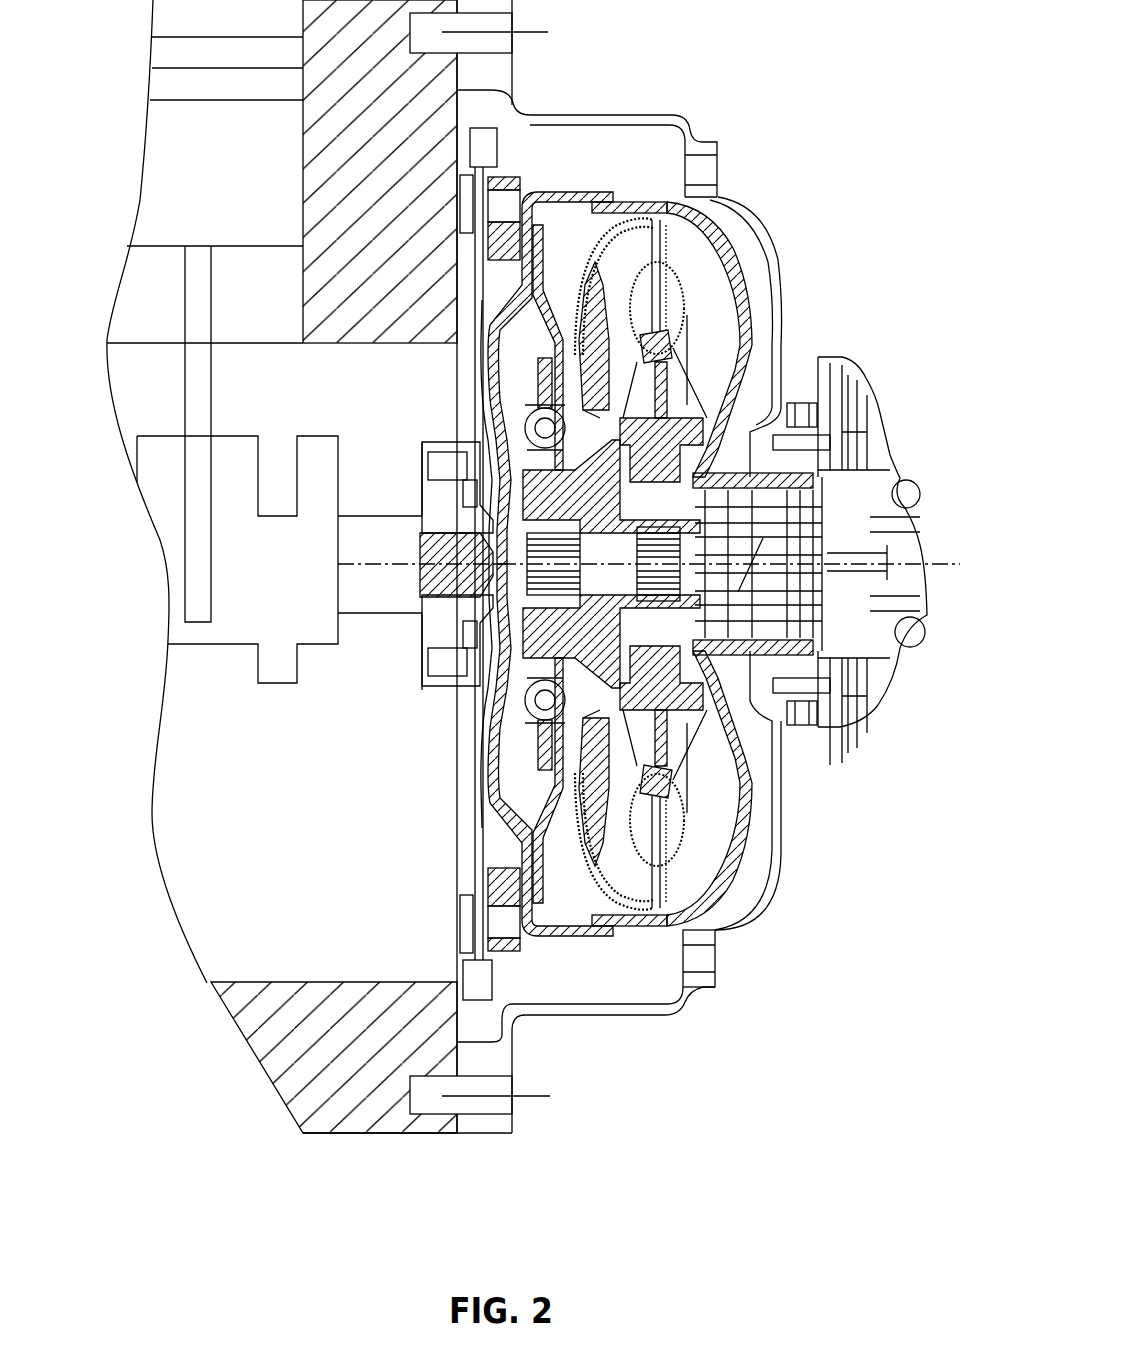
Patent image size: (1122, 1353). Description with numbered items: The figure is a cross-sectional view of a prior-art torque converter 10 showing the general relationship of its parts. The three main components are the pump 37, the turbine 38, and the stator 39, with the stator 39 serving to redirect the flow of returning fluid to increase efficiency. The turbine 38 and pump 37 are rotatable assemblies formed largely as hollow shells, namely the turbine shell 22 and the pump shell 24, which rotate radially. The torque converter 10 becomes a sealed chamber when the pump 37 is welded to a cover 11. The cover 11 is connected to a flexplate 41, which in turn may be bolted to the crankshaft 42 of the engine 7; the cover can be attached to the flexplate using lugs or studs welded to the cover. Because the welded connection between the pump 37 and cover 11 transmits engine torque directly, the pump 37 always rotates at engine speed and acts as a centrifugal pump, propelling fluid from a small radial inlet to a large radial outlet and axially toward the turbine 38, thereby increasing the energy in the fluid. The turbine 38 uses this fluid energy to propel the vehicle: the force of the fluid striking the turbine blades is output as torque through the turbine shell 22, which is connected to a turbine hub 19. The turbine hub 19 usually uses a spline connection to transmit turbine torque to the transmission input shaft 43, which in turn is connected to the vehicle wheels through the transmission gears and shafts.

The engine 7 is at (467, 1021).
The torque converter 10 is at (738, 251).
The cover 11 is at (483, 383).
The turbine hub 19 is at (533, 620).
The turbine shell 22 is at (607, 237).
The pump shell 24 is at (708, 238).
The pump 37 is at (737, 875).
The turbine 38 is at (582, 873).
The stator 39 is at (607, 785).
The flexplate 41 is at (474, 743).
The crankshaft 42 is at (399, 624).
The transmission input shaft 43 is at (852, 585).